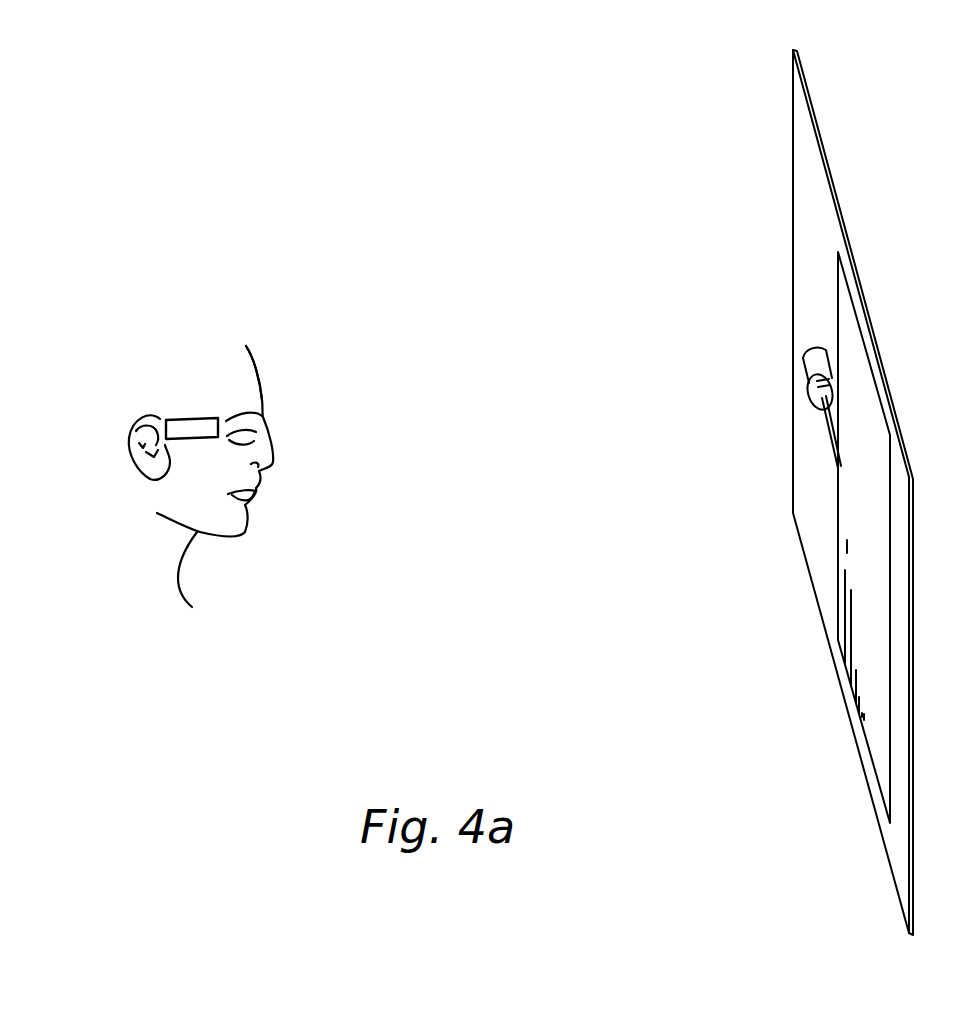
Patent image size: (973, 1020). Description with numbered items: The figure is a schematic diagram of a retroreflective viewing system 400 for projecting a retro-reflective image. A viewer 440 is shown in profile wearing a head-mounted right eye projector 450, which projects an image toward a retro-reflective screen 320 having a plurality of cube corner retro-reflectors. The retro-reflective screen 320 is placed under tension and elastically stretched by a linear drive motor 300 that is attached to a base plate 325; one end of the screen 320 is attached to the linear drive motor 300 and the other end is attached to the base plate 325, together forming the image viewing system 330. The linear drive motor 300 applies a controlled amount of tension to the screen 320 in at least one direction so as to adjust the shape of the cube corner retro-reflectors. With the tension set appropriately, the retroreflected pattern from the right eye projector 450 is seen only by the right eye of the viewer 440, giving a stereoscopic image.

The linear drive motor 300 is at (805, 376).
The retro-reflective screen 320 is at (852, 548).
The base plate 325 is at (770, 447).
The image viewing system 330 is at (750, 200).
The system 400 is at (348, 647).
The viewer 440 is at (224, 370).
The right eye projector 450 is at (179, 428).